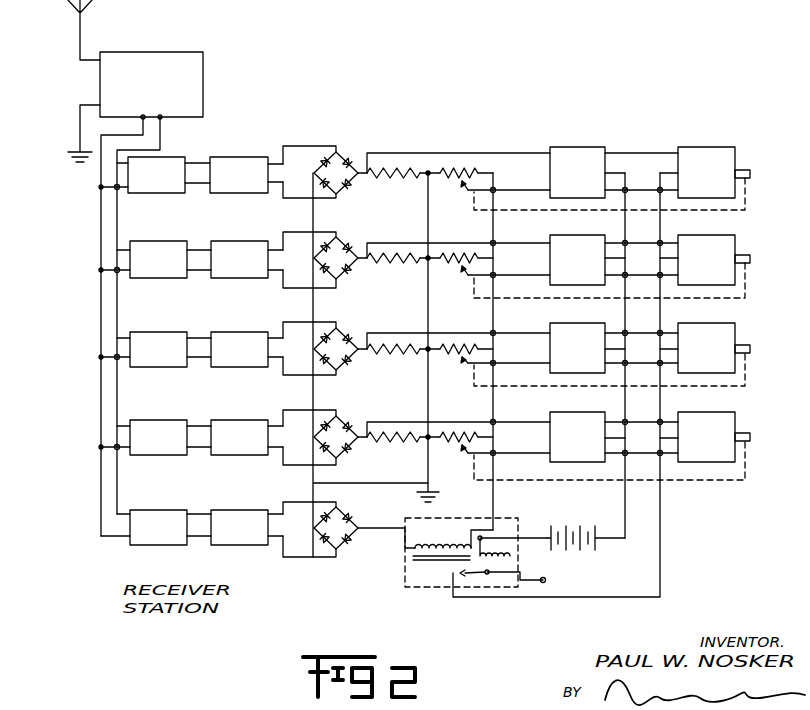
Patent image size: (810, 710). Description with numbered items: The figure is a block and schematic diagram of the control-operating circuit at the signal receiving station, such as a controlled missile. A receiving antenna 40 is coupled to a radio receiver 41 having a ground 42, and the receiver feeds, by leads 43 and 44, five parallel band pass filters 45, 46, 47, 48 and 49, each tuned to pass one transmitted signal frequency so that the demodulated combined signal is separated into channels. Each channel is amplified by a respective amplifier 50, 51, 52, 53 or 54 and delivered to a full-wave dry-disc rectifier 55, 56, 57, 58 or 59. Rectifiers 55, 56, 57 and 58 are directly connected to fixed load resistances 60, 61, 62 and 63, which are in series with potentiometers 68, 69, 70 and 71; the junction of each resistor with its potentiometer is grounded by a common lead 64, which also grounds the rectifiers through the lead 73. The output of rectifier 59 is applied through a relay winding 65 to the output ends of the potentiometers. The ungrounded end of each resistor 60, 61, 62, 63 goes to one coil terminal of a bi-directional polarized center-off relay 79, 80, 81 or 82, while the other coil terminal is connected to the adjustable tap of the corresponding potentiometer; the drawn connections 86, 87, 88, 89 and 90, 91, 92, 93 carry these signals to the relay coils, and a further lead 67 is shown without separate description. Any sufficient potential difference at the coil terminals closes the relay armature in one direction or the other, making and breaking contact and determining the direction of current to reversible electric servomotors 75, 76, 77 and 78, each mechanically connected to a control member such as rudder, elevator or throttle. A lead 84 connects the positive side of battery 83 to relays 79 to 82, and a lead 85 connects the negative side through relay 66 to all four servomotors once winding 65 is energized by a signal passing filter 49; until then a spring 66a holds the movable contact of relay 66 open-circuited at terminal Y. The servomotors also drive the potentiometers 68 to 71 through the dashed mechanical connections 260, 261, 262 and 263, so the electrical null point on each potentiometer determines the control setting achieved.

The receiving antenna 40 is at (82, 31).
The radio receiver 41 is at (157, 60).
The ground 42 is at (78, 110).
The lead 43 is at (140, 128).
The lead 44 is at (166, 133).
The band pass filter 45 is at (152, 194).
The band pass filter 46 is at (152, 246).
The band pass filter 47 is at (148, 337).
The band pass filter 48 is at (150, 425).
The band pass filter 49 is at (150, 520).
The amplifier 50 is at (256, 148).
The amplifier 51 is at (228, 244).
The amplifier 52 is at (225, 338).
The amplifier 53 is at (228, 424).
The amplifier 54 is at (226, 520).
The rectifier 55 is at (345, 167).
The rectifier 56 is at (338, 256).
The rectifier 57 is at (340, 345).
The rectifier 58 is at (340, 428).
The rectifier 59 is at (355, 524).
The resistance 60 is at (380, 187).
The resistance 61 is at (380, 272).
The resistance 62 is at (378, 362).
The resistance 63 is at (380, 450).
The common lead 64 is at (428, 385).
The relay winding 65 is at (442, 540).
The relay 66 is at (509, 556).
The spring 66a is at (503, 548).
The conductor 67 is at (497, 499).
The potentiometer 68 is at (442, 194).
The potentiometer 69 is at (442, 279).
The potentiometer 70 is at (442, 368).
The potentiometer 71 is at (442, 457).
The lead 73 is at (363, 486).
The servomotor 75 is at (700, 148).
The servomotor 76 is at (718, 244).
The servomotor 77 is at (688, 323).
The servomotor 78 is at (728, 404).
The polar relay 79 is at (578, 126).
The polar relay 80 is at (560, 240).
The polar relay 81 is at (558, 330).
The polar relay 82 is at (590, 398).
The battery 83 is at (597, 545).
The lead 84 is at (625, 497).
The lead 85 is at (540, 598).
The conductor 86 is at (467, 153).
The conductor 87 is at (380, 243).
The conductor 88 is at (443, 333).
The conductor 89 is at (450, 423).
The conductor 90 is at (510, 188).
The conductor 91 is at (537, 259).
The conductor 92 is at (510, 372).
The conductor 93 is at (510, 460).
The mechanical connection 260 is at (752, 198).
The mechanical connection 261 is at (752, 286).
The mechanical connection 262 is at (752, 374).
The mechanical connection 263 is at (752, 462).